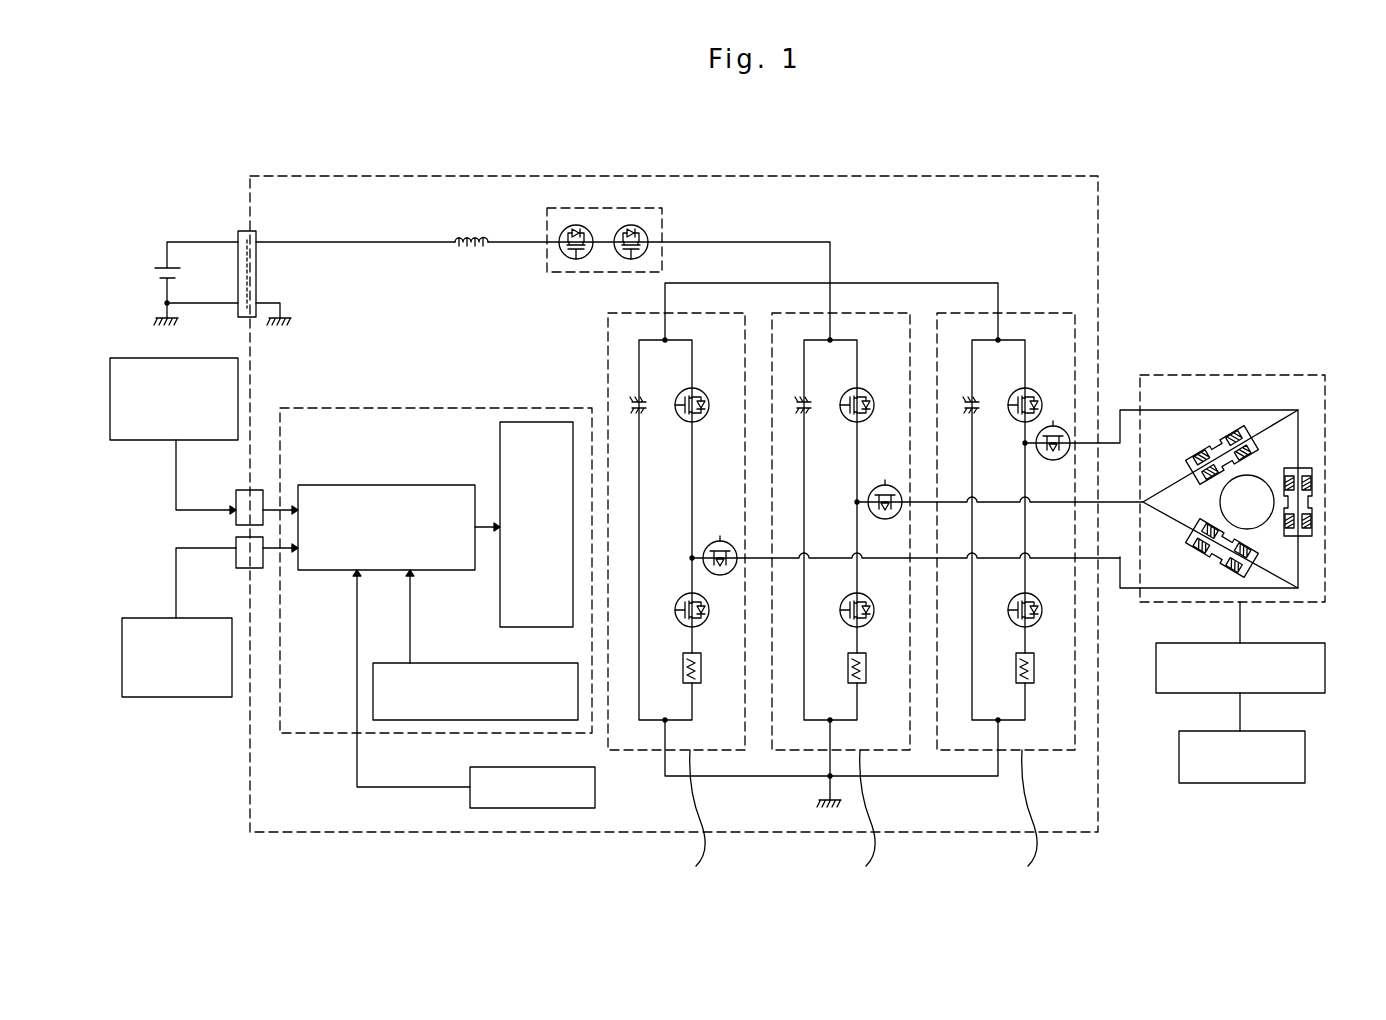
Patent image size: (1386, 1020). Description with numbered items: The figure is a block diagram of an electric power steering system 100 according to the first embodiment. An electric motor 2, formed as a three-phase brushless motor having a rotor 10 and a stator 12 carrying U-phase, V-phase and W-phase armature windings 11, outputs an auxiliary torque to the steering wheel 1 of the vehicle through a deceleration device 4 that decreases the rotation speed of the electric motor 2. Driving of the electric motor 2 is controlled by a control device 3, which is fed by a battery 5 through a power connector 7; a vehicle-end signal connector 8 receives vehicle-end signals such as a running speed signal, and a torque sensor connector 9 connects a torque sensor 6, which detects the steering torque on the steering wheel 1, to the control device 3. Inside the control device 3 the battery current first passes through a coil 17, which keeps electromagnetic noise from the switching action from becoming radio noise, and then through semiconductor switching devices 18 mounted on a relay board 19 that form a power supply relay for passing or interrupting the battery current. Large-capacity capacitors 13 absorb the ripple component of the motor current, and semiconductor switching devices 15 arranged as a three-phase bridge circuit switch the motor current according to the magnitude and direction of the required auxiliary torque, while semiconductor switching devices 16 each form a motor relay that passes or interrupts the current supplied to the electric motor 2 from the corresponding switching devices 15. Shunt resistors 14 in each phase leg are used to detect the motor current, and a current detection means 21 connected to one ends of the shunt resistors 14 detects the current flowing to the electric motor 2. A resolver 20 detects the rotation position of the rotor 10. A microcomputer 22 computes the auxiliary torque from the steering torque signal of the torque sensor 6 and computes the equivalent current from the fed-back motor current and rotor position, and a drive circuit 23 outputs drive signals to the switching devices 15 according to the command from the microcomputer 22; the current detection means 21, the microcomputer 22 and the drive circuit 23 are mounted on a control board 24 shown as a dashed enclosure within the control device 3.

The electric power steering system 100 is at (912, 131).
The steering wheel 1 is at (1305, 753).
The electric motor 2 is at (1284, 375).
The control device 3 is at (1098, 279).
The deceleration device 4 is at (1325, 665).
The battery 5 is at (153, 275).
The torque sensor 6 is at (177, 697).
The power connector 7 is at (238, 240).
The vehicle-end signal connector 8 is at (236, 520).
The torque sensor connector 9 is at (236, 545).
The rotor 10 is at (1252, 522).
The armature windings 11 is at (1215, 440).
The stator 12 is at (1298, 434).
The large-capacity capacitors 13 is at (640, 398).
The shunt resistors 14 is at (702, 672).
The semiconductor switching devices 15 is at (682, 418).
The semiconductor switching devices 16 is at (716, 536).
The coil 17 is at (466, 225).
The semiconductor switching devices 18 is at (576, 225).
The relay board 19 is at (659, 208).
The resolver 20 is at (540, 808).
The current detection means 21 is at (452, 663).
The microcomputer 22 is at (386, 485).
The drive circuit 23 is at (548, 430).
The control board 24 is at (304, 733).